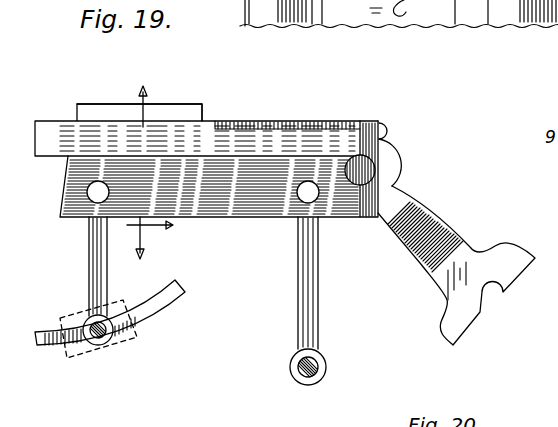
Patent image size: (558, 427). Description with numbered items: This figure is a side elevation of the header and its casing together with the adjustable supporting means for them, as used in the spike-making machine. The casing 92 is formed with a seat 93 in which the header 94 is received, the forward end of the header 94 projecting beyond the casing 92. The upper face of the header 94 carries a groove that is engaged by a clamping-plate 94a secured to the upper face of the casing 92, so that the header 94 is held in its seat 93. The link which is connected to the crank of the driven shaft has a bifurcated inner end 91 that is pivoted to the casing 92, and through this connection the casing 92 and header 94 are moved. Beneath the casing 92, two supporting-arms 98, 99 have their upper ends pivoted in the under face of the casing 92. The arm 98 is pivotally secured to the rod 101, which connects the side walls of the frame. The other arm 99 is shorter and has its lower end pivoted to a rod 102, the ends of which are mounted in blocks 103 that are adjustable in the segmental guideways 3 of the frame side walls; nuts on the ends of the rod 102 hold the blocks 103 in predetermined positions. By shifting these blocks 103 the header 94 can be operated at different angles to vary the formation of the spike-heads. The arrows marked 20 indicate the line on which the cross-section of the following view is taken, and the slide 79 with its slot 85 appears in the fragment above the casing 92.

The segmental guideways 3 is at (172, 283).
The gravity-pawl 20 is at (150, 161).
The transversely-extending slide 79 is at (356, 12).
The slot 85 is at (402, 14).
The bifurcated inner end of link 91 is at (440, 228).
The casing 92 is at (267, 138).
The seat 93 is at (160, 140).
The header 94 is at (177, 119).
The clamping-plate 94a is at (98, 110).
The supporting-arm 98 is at (303, 280).
The supporting-arm 99 is at (95, 287).
The rod 101 is at (308, 384).
The rod 102 is at (96, 337).
The blocks 103 is at (130, 323).